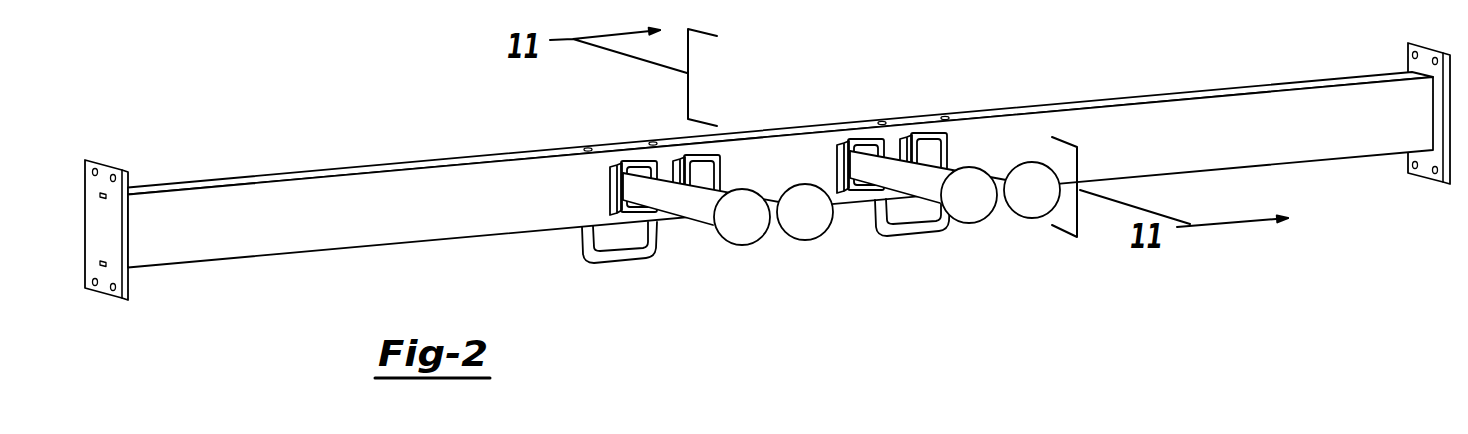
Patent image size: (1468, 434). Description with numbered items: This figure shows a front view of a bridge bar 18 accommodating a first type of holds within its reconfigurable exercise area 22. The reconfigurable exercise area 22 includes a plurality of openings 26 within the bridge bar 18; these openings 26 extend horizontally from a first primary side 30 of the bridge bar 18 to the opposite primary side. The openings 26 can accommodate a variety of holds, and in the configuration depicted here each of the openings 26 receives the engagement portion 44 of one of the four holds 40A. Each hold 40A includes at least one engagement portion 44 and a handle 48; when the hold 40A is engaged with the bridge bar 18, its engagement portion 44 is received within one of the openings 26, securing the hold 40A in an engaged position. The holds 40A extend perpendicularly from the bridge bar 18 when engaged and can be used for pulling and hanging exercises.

The bridge bar 18 is at (199, 208).
The first primary side 30 is at (328, 215).
The reconfigurable exercise area 22 is at (921, 90).
The engagement portion 44 is at (633, 156).
The handle 48 is at (740, 176).
The openings 26 is at (648, 219).
The holds 40A is at (740, 222).